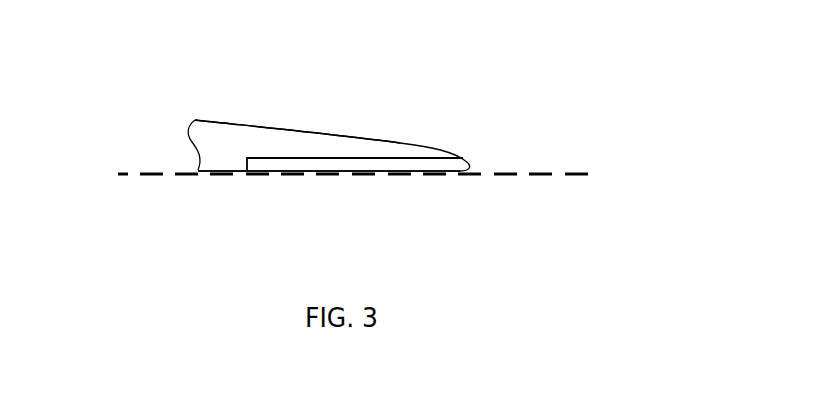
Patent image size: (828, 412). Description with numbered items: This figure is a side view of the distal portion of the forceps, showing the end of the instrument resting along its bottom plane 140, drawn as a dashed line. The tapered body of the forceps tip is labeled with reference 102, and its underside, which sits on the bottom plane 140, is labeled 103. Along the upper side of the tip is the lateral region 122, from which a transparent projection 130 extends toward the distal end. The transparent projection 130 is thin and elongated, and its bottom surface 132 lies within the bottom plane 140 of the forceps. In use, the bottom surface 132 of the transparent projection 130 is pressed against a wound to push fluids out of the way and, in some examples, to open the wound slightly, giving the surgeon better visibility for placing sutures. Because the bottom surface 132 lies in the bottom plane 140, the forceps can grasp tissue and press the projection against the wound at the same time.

The body 102 is at (207, 133).
The bottom surface 103 is at (220, 172).
The lateral region 122 is at (305, 145).
The transparent projection 130 is at (393, 158).
The bottom surface 132 is at (342, 173).
The bottom plane 140 is at (513, 170).